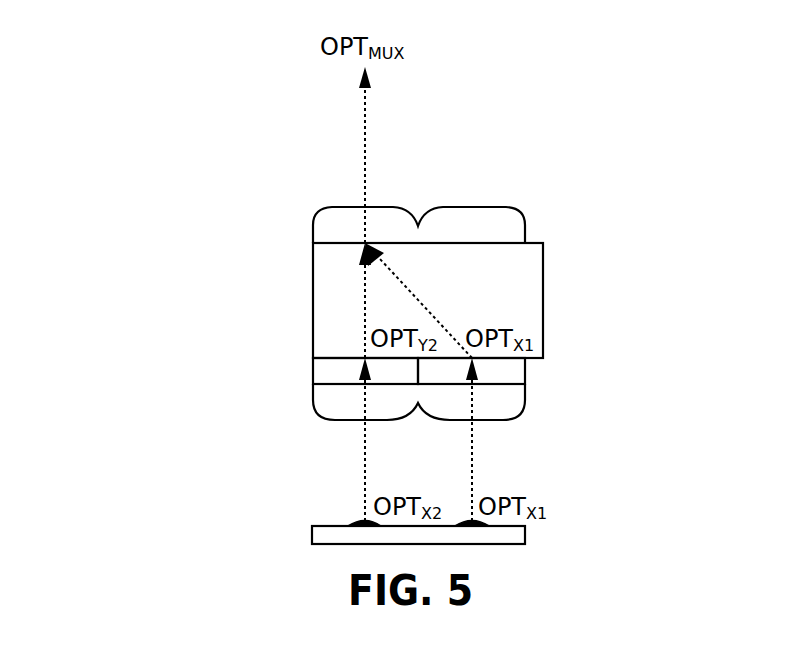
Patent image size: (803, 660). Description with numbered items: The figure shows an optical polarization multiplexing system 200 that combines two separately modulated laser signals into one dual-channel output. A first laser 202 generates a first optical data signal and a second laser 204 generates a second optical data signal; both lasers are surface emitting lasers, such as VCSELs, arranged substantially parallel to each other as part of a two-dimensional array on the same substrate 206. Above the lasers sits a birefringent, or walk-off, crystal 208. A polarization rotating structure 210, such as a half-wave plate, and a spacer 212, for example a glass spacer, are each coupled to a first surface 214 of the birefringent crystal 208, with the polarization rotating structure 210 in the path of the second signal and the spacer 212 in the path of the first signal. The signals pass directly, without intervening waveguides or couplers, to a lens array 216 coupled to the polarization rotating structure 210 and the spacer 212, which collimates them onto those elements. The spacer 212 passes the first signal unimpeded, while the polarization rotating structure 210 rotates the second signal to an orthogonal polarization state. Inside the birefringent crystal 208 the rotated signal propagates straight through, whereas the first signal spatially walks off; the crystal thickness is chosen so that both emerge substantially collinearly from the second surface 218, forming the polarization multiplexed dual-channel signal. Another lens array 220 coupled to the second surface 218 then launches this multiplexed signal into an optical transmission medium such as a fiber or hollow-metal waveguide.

The optical polarization multiplexing system 200 is at (125, 73).
The first laser 202 is at (466, 522).
The second laser 204 is at (358, 522).
The substrate 206 is at (313, 535).
The birefringent crystal 208 is at (543, 305).
The polarization rotating structure 210 is at (313, 370).
The spacer 212 is at (525, 372).
The first surface 214 is at (330, 357).
The lens array 216 is at (321, 412).
The second surface 218 is at (330, 244).
The lens array 220 is at (337, 210).